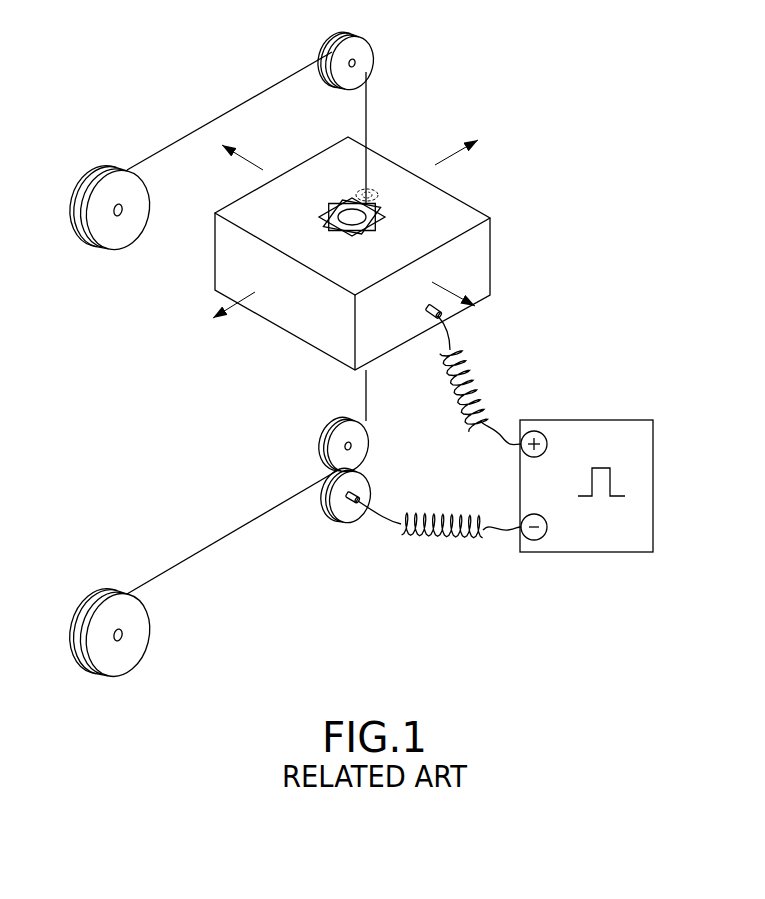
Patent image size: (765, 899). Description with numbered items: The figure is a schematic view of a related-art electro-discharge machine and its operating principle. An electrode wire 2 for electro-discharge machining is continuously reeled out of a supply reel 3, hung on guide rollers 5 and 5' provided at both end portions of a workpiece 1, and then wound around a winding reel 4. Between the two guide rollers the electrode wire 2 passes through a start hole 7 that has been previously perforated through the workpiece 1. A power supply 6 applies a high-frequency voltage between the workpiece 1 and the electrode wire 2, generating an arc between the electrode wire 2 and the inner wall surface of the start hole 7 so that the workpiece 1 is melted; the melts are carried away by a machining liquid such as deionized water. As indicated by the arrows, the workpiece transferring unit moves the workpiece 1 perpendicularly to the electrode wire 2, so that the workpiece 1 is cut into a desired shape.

The workpiece 1 is at (490, 247).
The electrode wire 2 is at (367, 112).
The supply reel 3 is at (110, 243).
The winding reel 4 is at (133, 637).
The guide roller 5 is at (365, 47).
The guide roller 5' is at (315, 443).
The power supply 6 is at (598, 420).
The start hole 7 is at (380, 207).